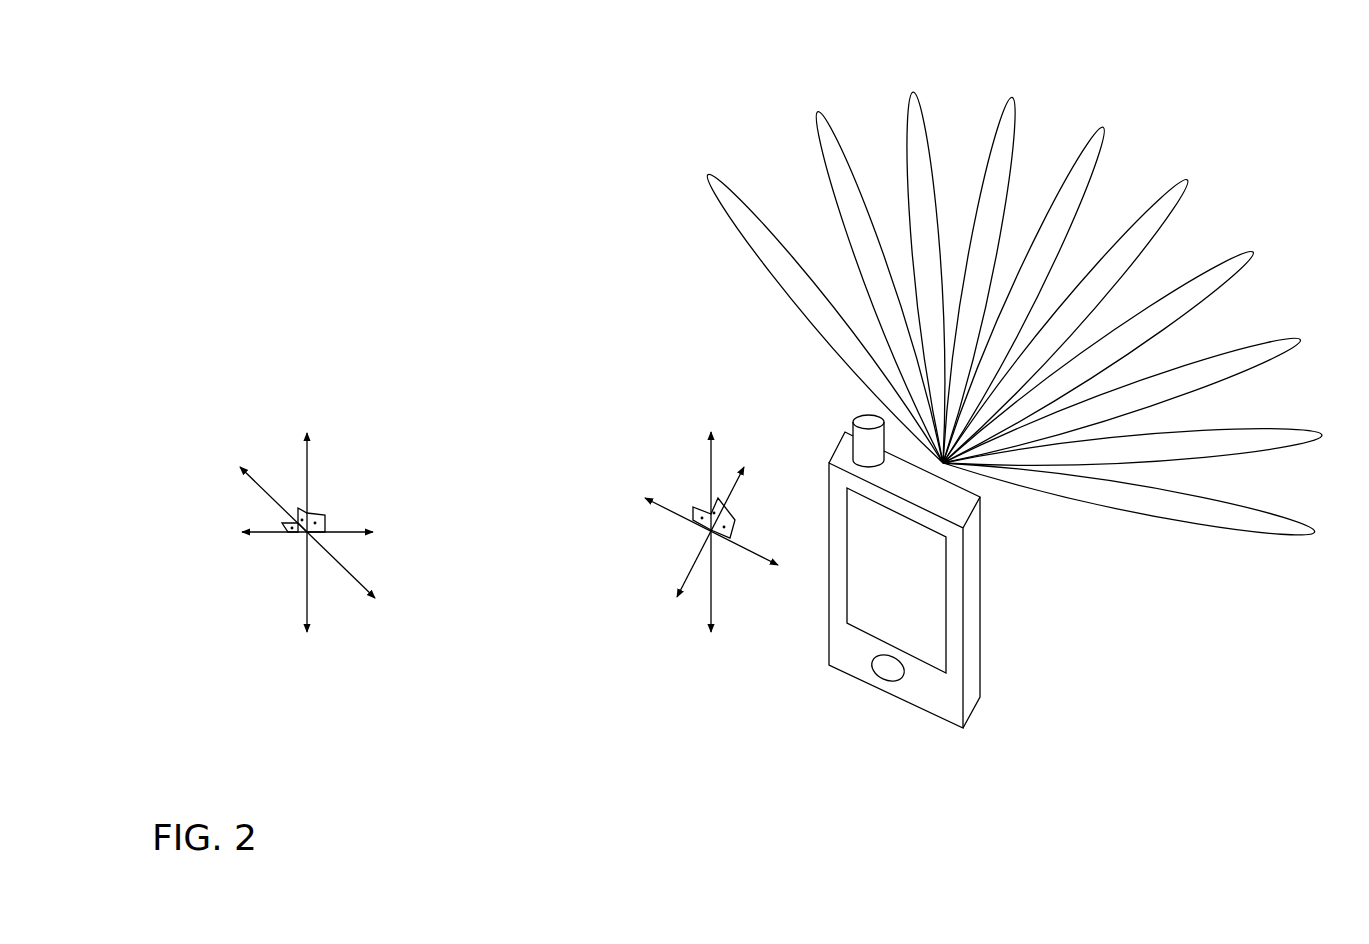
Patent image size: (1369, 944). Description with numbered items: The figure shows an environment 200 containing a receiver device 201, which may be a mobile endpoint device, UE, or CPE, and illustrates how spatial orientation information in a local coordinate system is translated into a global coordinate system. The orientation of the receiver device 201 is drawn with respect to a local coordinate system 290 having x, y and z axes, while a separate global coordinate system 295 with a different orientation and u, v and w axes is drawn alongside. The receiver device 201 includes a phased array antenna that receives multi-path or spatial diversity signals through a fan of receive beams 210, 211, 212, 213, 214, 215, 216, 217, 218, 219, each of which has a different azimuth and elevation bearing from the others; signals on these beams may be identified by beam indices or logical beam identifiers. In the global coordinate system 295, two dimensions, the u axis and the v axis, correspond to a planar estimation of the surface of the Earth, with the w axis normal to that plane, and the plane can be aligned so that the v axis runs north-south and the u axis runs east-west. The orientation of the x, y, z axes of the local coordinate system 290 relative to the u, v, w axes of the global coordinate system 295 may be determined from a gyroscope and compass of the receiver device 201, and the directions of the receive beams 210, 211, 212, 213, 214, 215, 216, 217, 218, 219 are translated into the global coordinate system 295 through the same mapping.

The environment 200 is at (192, 66).
The receiver device 201 is at (982, 677).
The receive beam 210 is at (717, 197).
The receive beam 211 is at (818, 137).
The receive beam 212 is at (911, 106).
The receive beam 213 is at (1003, 104).
The receive beam 214 is at (1100, 128).
The receive beam 215 is at (1173, 183).
The receive beam 216 is at (1243, 253).
The receive beam 217 is at (1283, 335).
The receive beam 218 is at (1285, 428).
The receive beam 219 is at (1300, 518).
The local coordinate system 290 is at (655, 461).
The global coordinate system 295 is at (215, 461).